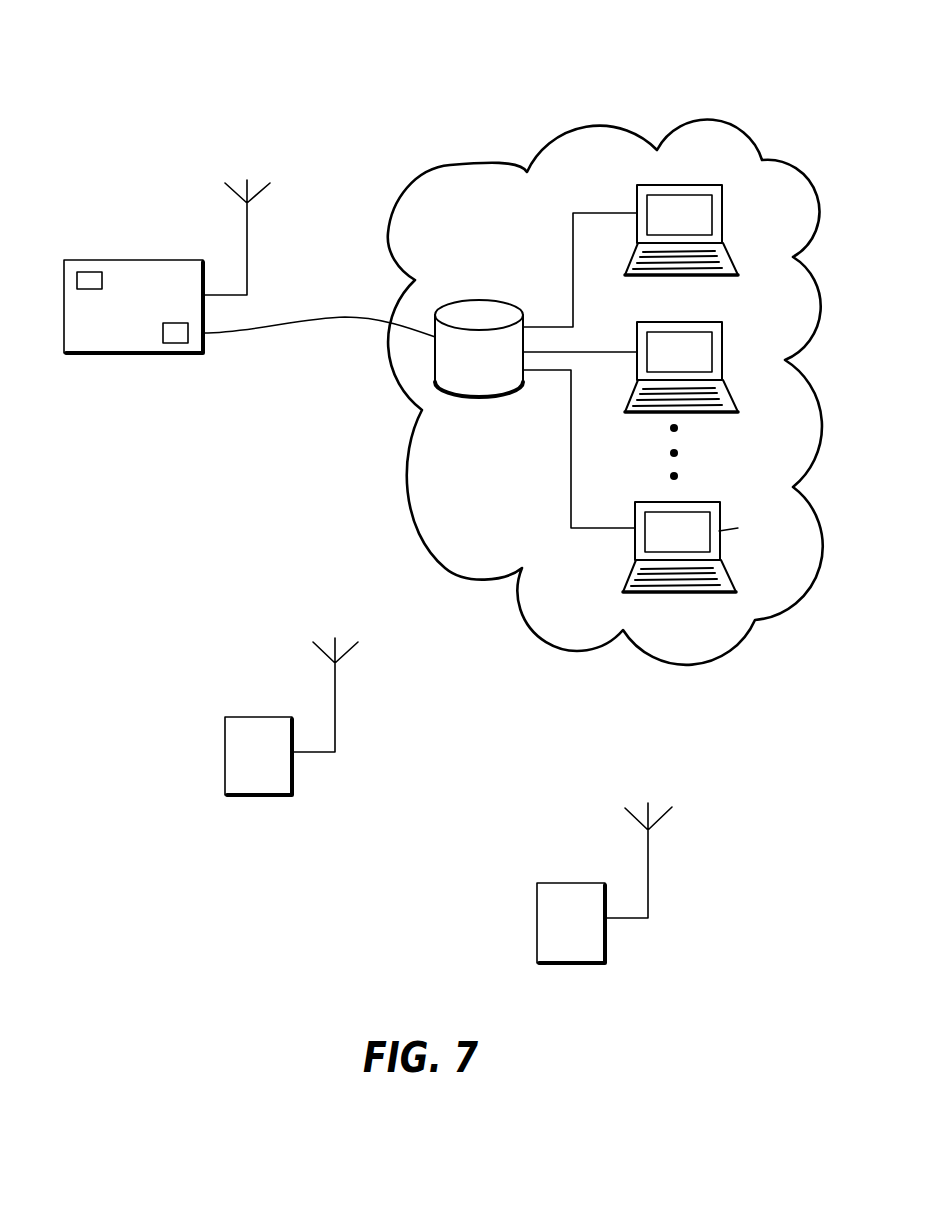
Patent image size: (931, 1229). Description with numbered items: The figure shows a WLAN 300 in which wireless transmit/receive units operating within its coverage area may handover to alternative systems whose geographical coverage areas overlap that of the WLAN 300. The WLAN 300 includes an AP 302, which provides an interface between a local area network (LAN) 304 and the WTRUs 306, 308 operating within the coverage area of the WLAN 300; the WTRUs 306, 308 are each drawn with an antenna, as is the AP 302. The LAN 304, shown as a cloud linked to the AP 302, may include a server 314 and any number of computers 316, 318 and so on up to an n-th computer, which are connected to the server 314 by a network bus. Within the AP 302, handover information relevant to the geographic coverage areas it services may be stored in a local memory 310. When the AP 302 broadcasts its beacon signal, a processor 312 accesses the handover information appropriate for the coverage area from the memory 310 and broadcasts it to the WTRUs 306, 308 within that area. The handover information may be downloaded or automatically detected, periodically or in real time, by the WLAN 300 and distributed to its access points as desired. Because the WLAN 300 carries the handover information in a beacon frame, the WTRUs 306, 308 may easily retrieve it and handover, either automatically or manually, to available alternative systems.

The WLAN 300 is at (413, 97).
The AP 302 is at (102, 355).
The local area network (LAN) 304 is at (712, 130).
The WTRU 306 is at (225, 767).
The WTRU 308 is at (537, 943).
The local memory 310 is at (90, 273).
The processor 312 is at (172, 342).
The server 314 is at (482, 396).
The computer 316 is at (722, 227).
The computer 318 is at (722, 340).